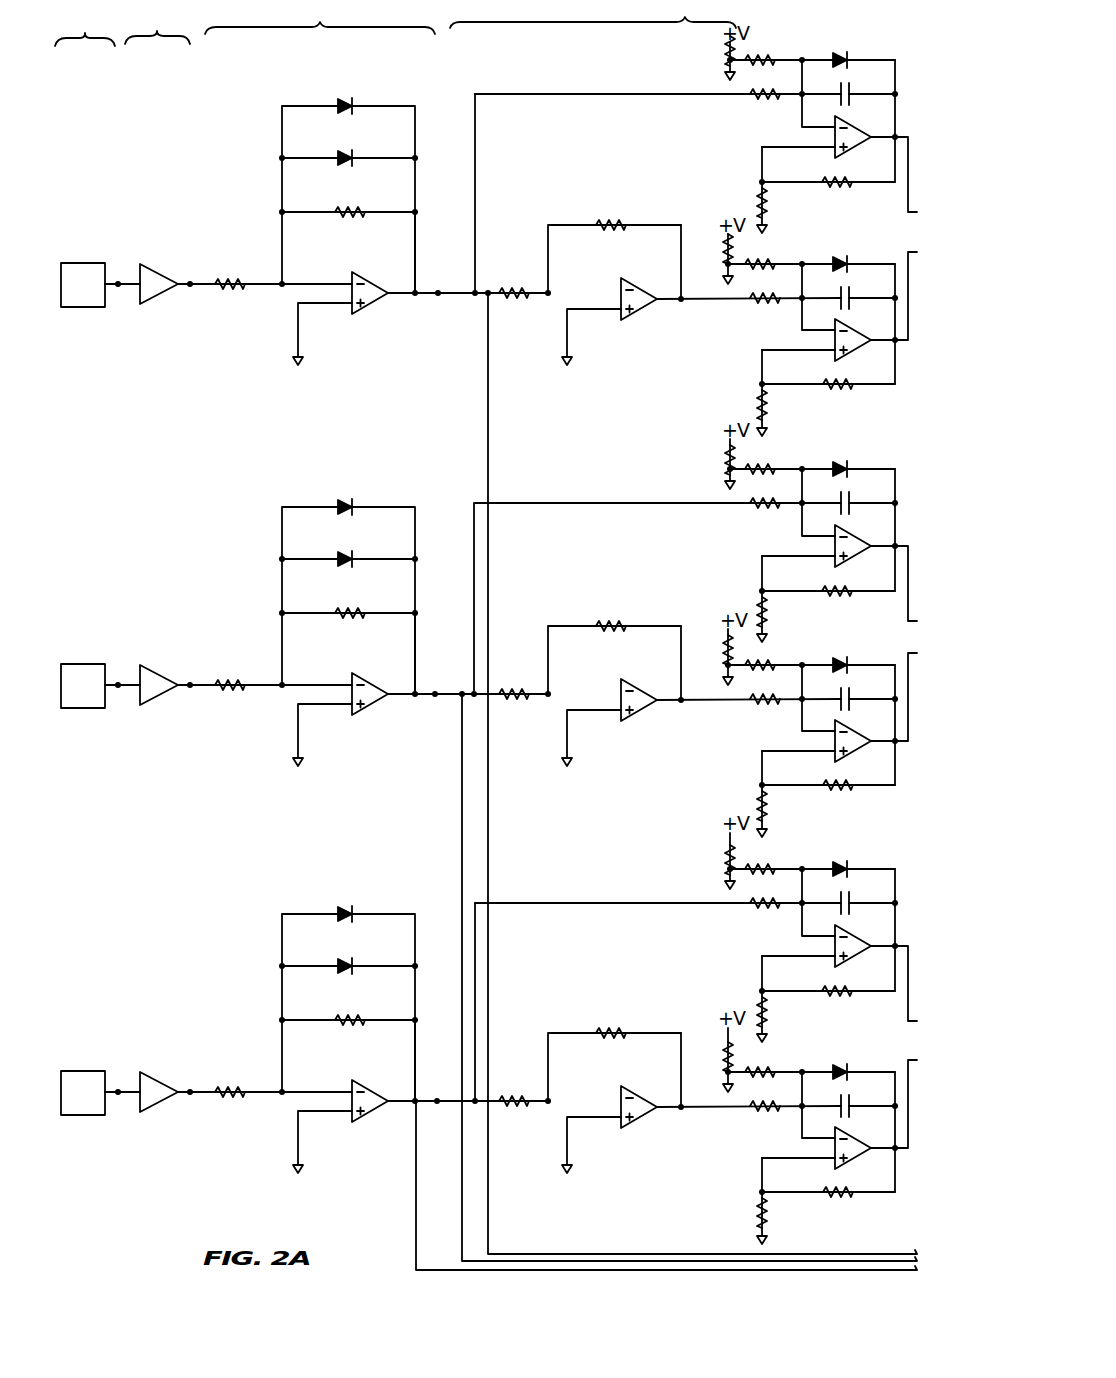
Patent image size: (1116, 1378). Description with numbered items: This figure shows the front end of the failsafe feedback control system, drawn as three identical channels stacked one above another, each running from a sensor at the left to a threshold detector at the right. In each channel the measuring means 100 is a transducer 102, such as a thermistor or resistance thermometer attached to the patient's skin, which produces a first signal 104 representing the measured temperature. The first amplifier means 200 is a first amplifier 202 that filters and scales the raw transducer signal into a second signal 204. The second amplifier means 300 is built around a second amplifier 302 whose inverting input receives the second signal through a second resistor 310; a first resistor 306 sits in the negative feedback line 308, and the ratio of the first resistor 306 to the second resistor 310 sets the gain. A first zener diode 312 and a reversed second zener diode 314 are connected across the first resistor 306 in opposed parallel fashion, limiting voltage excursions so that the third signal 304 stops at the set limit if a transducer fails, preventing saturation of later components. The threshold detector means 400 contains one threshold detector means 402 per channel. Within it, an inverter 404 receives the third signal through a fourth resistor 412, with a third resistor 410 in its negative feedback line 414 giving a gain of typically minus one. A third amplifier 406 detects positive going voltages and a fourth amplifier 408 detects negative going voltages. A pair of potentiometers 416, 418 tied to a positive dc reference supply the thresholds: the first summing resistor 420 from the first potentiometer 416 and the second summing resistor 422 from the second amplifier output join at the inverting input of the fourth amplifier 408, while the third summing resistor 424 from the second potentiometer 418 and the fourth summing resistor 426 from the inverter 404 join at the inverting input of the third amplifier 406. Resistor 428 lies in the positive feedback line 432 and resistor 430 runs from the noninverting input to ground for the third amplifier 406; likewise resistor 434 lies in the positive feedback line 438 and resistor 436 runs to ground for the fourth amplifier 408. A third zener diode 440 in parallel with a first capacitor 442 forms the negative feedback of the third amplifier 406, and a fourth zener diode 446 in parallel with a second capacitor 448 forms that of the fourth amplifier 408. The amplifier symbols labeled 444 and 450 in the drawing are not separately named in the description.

The measuring means 100 is at (85, 27).
The first amplifier means 200 is at (157, 25).
The second amplifier means 300 is at (320, 18).
The threshold detector means 400 is at (593, 14).
The transducer 102 is at (83, 259).
The first signal 104 is at (120, 313).
The first amplifier 202 is at (161, 265).
The second signal 204 is at (199, 313).
The second amplifier 302 is at (354, 318).
The third signal 304 is at (445, 265).
The first resistor 306 is at (369, 197).
The negative feedback line 308 is at (440, 243).
The second resistor 310 is at (233, 263).
The first zener diode 312 is at (319, 91).
The second zener diode 314 is at (371, 144).
The threshold detector means 402 is at (857, 82).
The inverter 404 is at (609, 321).
The third amplifier 406 is at (823, 368).
The fourth amplifier 408 is at (798, 162).
The third resistor 410 is at (606, 206).
The fourth resistor 412 is at (513, 273).
The negative feedback line 414 is at (660, 196).
The first potentiometer 416 is at (697, 52).
The second potentiometer 418 is at (709, 247).
The first summing resistor 420 is at (782, 46).
The second summing resistor 422 is at (735, 107).
The third summing resistor 424 is at (776, 251).
The fourth summing resistor 426 is at (735, 311).
The fifth resistor 428 is at (856, 398).
The fifth resistor 430 is at (790, 413).
The positive feedback line 432 is at (792, 372).
The fifth resistor 434 is at (823, 197).
The fifth resistor 436 is at (730, 196).
The positive feedback line 438 is at (886, 178).
The third zener diode 440 is at (844, 252).
The first capacitor 442 is at (865, 288).
The comparator 444 is at (862, 332).
The fourth zener diode 446 is at (849, 48).
The second capacitor 448 is at (865, 84).
The comparator 450 is at (858, 128).